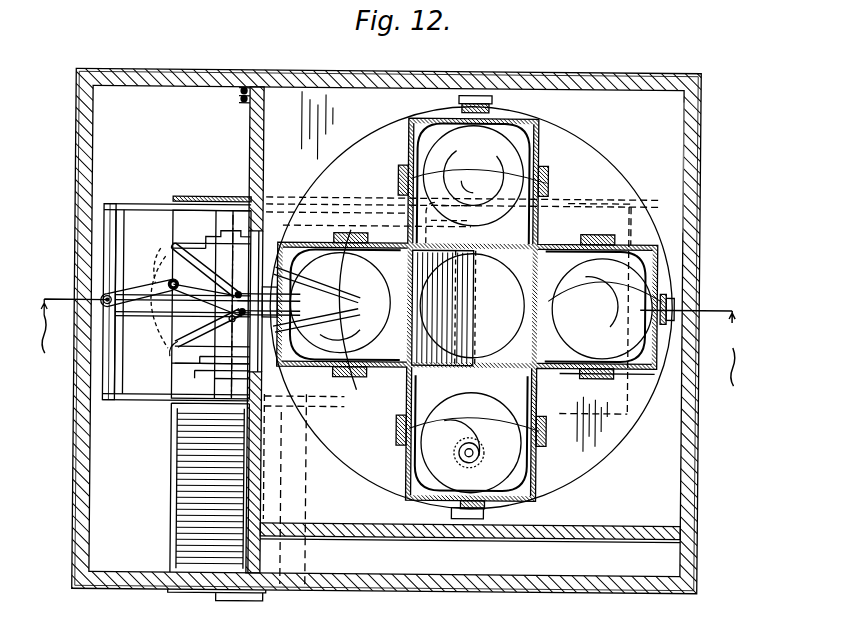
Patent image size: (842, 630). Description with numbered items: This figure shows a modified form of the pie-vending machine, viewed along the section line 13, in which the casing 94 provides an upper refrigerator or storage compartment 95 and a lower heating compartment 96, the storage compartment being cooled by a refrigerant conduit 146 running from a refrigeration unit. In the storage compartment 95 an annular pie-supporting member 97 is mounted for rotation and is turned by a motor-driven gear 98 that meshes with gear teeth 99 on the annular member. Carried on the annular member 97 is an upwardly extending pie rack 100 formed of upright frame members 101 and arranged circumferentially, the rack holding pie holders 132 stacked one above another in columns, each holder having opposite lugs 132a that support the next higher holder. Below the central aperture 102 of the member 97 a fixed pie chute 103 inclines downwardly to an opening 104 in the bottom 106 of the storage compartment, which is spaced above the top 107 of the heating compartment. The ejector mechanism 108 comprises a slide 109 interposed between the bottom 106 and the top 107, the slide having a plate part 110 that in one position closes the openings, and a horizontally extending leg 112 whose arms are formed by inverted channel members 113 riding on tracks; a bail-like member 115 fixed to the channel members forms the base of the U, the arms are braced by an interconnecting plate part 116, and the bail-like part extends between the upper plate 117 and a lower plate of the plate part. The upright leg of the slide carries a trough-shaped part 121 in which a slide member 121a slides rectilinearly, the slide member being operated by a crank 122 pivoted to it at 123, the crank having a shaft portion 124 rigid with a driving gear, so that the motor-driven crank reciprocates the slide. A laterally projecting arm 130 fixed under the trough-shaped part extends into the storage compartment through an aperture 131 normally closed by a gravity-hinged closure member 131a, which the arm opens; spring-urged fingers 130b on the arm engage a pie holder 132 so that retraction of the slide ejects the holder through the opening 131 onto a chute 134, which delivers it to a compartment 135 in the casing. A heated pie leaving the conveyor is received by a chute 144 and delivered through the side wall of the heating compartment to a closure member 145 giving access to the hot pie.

The section line 13- 13 is at (385, 345).
The casing 94 is at (701, 169).
The upper refrigerator or storage compartment 95 is at (660, 135).
The lower heating compartment 96 is at (614, 195).
The annular pie-supporting member 97 is at (580, 148).
The motor-driven gear 98 is at (470, 455).
The gear teeth 99 is at (530, 445).
The pie rack 100 is at (610, 380).
The upright frame members 101 is at (520, 478).
The central aperture 102 is at (480, 358).
The fixed pie chute 103 is at (476, 272).
The opening 104 is at (530, 410).
The bottom of the storage compartment 106 is at (644, 505).
The top of the heating compartment 107 is at (198, 215).
The ejector mechanism 108 is at (152, 201).
The slide 109 is at (151, 413).
The plate part 110 is at (562, 220).
The horizontally extending leg 112 is at (124, 413).
The inverted channel members 113 is at (232, 208).
The bail-like member 115 is at (455, 186).
The interconnecting plate part 116 is at (355, 225).
The upper plate 117 is at (445, 236).
The trough-shaped part 121 is at (112, 236).
The slide member 121a is at (108, 272).
The crank 122 is at (130, 298).
The pivot 123 is at (105, 300).
The shaft portion 124 is at (172, 292).
The laterally projecting arm 130 is at (172, 300).
The fingers 130b is at (200, 345).
The aperture 131 is at (262, 232).
The closure member 131a is at (305, 262).
The pie holders 132 is at (290, 402).
The lugs 132a is at (325, 402).
The chute 134 is at (186, 374).
The compartment 135 is at (202, 132).
The chute 144 is at (190, 500).
The closure member 145 is at (200, 594).
The refrigerant conduit 146 is at (242, 103).